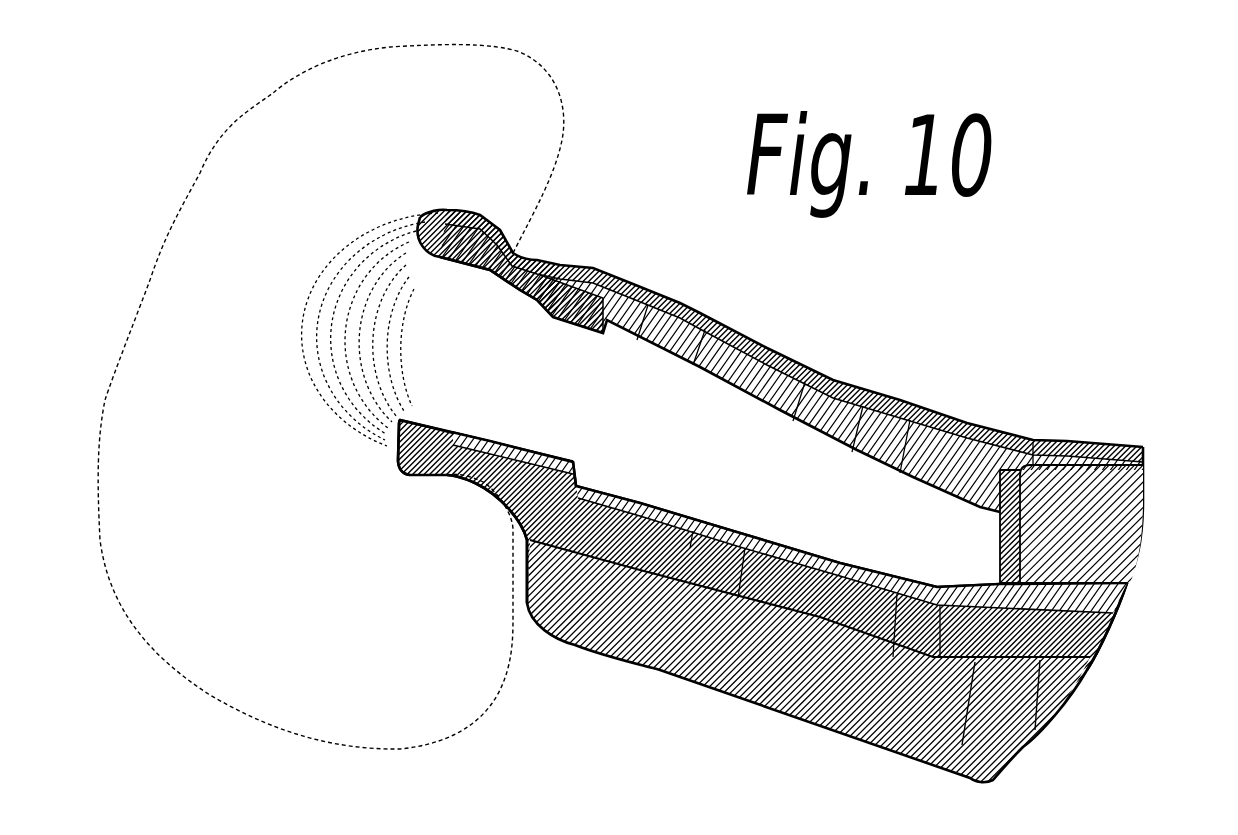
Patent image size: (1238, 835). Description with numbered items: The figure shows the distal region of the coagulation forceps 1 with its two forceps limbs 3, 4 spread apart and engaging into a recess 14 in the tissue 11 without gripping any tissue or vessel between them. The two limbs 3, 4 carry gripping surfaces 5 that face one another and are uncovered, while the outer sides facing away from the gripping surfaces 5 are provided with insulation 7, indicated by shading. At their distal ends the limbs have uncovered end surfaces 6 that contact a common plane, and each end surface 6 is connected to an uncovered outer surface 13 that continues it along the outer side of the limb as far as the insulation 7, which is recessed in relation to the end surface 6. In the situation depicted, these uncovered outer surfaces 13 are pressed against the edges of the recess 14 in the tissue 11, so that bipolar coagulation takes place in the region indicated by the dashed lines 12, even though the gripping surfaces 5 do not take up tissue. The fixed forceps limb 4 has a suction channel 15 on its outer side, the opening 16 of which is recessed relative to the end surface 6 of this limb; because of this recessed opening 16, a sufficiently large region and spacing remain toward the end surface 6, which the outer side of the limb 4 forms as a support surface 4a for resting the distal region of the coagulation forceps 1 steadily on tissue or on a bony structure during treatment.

The coagulation forceps 1 is at (1115, 415).
The forceps limb 3 is at (707, 325).
The fixed forceps limb 4 is at (708, 522).
The support surface 4a is at (525, 572).
The gripping surface 5 is at (463, 262).
The end surface 6 is at (437, 240).
The insulation 7 is at (709, 356).
The tissue 11 is at (561, 174).
The dashed lines 12 is at (333, 326).
The outer surface 13 is at (489, 221).
The recess 14 is at (446, 343).
The suction channel 15 is at (670, 606).
The opening 16 is at (524, 583).